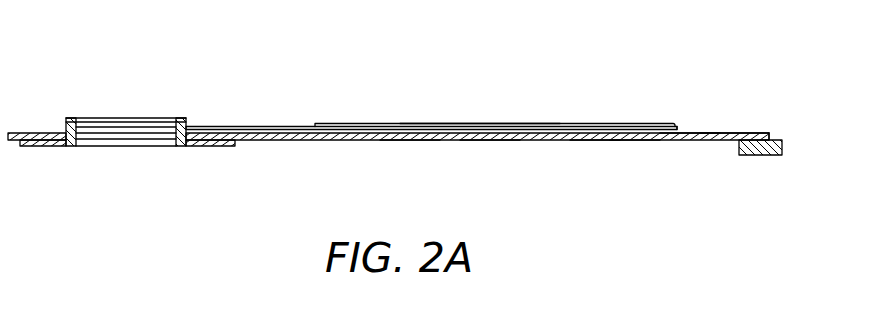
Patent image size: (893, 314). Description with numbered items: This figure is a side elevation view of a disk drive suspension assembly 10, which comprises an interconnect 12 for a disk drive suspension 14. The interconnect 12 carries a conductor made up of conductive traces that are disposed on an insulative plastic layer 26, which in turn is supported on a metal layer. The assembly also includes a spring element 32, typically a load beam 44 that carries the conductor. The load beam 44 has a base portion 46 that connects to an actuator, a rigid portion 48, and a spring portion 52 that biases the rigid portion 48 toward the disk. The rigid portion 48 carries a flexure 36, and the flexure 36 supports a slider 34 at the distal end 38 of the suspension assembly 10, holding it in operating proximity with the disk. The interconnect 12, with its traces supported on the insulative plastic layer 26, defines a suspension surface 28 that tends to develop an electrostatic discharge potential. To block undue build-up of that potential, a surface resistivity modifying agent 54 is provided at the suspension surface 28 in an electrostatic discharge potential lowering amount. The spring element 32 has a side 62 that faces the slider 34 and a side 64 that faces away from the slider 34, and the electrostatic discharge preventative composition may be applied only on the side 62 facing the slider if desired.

The disk drive suspension assembly 10 is at (85, 99).
The interconnect 12 is at (377, 122).
The disk drive suspension 14 is at (240, 147).
The insulative plastic layer 26 is at (632, 141).
The suspension surface 28 is at (688, 126).
The spring element 32 is at (489, 122).
The slider 34 is at (757, 156).
The flexure 36 is at (751, 132).
The distal end 38 is at (733, 132).
The load beam 44 is at (272, 125).
The base portion 46 is at (187, 147).
The rigid portion 48 is at (597, 141).
The spring portion 52 is at (282, 141).
The surface resistivity modifying agent 54 is at (410, 141).
The side facing the slider 62 is at (488, 141).
The side facing away from the slider 64 is at (188, 118).